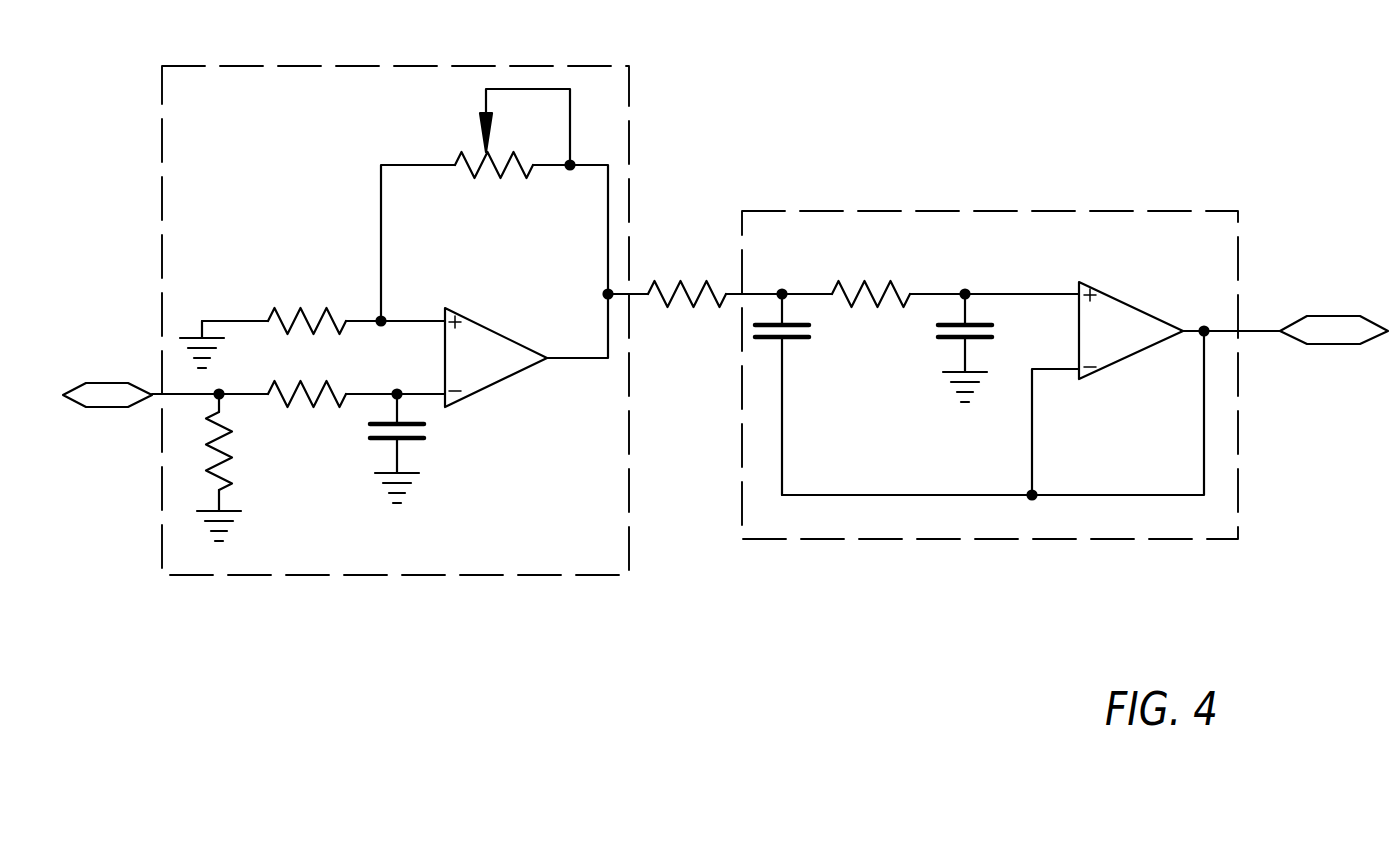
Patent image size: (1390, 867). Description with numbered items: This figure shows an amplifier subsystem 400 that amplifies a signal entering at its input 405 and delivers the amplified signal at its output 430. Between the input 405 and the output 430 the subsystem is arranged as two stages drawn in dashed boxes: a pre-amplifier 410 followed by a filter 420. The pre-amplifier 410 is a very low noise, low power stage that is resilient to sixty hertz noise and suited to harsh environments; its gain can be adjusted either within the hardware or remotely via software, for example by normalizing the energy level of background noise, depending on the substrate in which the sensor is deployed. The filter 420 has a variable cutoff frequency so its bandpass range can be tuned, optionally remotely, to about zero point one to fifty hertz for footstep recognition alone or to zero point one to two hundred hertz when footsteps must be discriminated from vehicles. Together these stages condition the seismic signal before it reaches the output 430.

The amplifier subsystem 400 is at (725, 386).
The input 405 is at (118, 408).
The pre-amplifier 410 is at (412, 576).
The filter 420 is at (1112, 210).
The output 430 is at (1333, 345).